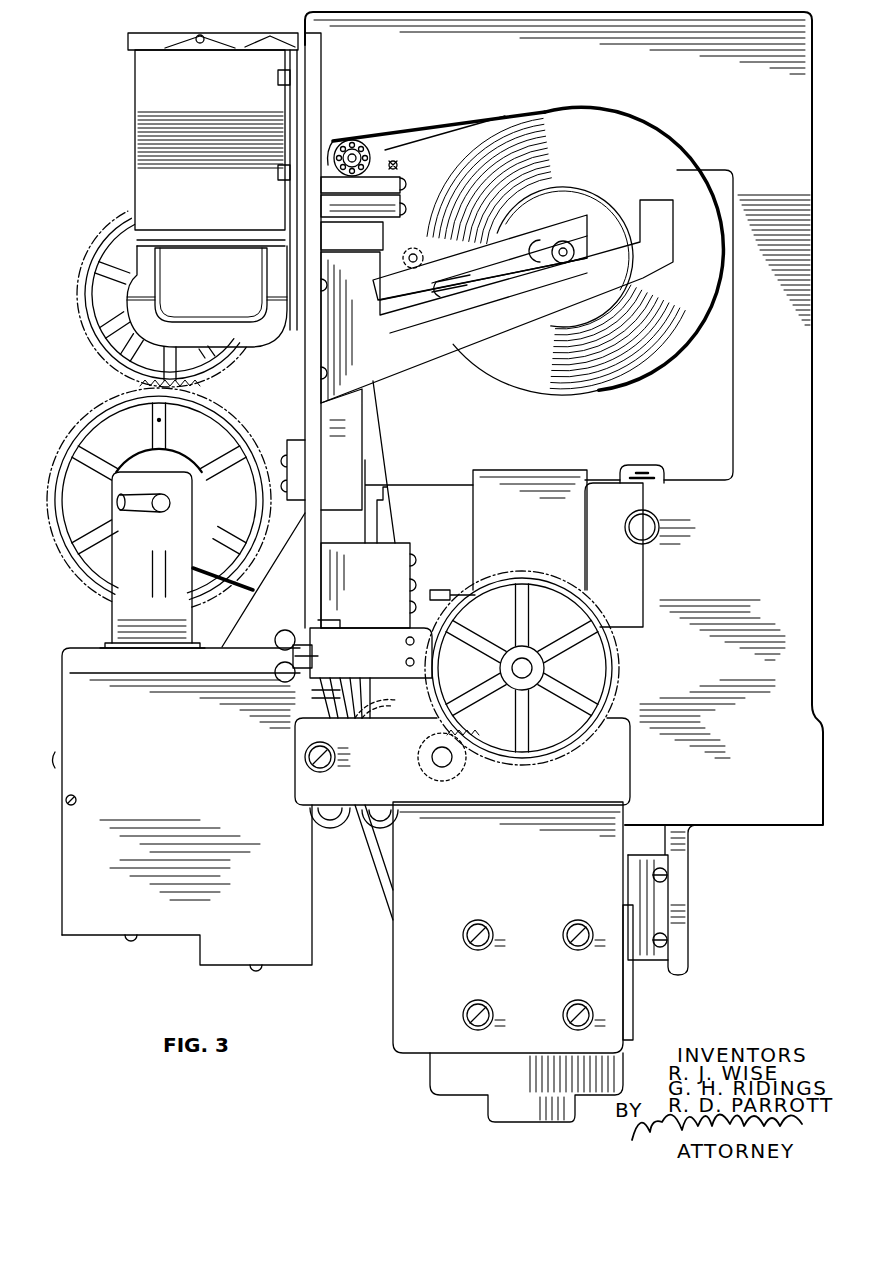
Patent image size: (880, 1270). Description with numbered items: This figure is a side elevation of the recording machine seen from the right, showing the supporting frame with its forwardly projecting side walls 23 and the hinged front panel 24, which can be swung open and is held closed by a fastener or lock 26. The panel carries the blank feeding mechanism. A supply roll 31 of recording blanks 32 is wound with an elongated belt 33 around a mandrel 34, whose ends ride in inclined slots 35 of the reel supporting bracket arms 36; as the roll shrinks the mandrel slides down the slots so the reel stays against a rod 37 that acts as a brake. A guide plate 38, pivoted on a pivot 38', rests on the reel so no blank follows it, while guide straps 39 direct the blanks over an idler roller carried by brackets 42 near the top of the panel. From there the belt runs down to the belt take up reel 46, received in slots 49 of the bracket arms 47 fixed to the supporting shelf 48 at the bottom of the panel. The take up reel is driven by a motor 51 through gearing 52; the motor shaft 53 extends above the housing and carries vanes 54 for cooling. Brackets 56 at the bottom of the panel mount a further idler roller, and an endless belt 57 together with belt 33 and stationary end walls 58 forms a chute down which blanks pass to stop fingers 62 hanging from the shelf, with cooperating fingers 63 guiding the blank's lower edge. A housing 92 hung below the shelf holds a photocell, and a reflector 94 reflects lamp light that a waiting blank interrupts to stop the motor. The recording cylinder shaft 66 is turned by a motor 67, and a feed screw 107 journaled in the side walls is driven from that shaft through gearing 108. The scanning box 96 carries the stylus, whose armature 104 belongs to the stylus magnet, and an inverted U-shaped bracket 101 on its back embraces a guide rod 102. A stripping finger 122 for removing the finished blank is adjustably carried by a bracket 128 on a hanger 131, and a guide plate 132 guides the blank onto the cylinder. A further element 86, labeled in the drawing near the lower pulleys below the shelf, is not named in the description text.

The side walls 23 is at (735, 398).
The front panel 24 is at (305, 380).
The fastener or lock 26 is at (283, 680).
The supply roll 31 is at (645, 160).
The recording blank 32 is at (345, 716).
The belt 33 is at (440, 130).
The mandrel 34 is at (575, 249).
The inclined slots 35 is at (480, 290).
The reel supporting bracket arms 36 is at (440, 356).
The rod 37 is at (402, 260).
The guide plate 38 is at (445, 147).
The pivot 38' is at (385, 178).
The guide straps 39 is at (400, 138).
The brackets 42 is at (387, 212).
The belt take up reel 46 is at (205, 487).
The bracket arms 47 is at (167, 564).
The supporting shelf 48 is at (72, 648).
The slots 49 is at (121, 506).
The motor 51 is at (150, 82).
The gearing 52 is at (120, 400).
The motor shaft 53 is at (212, 40).
The vanes 54 is at (282, 42).
The brackets 56 is at (402, 556).
The endless belt 57 is at (392, 446).
The stationary end walls 58 is at (352, 448).
The stop fingers 62 is at (312, 700).
The cooperating fingers 63 is at (383, 678).
The shaft 66 is at (432, 757).
The motor 67 is at (463, 1092).
The pulley 86 is at (330, 846).
The housing 92 is at (191, 779).
The reflector 94 is at (346, 692).
The scanning box 96 is at (540, 529).
The inverted U-shaped bracket 101 is at (652, 465).
The guide rod 102 is at (655, 540).
The armature 104 is at (440, 597).
The feed screw 107 is at (535, 668).
The gearing 108 is at (432, 744).
The stripping finger 122 is at (368, 862).
The bracket 128 is at (645, 950).
The hanger 131 is at (683, 893).
The guide plate 132 is at (462, 761).